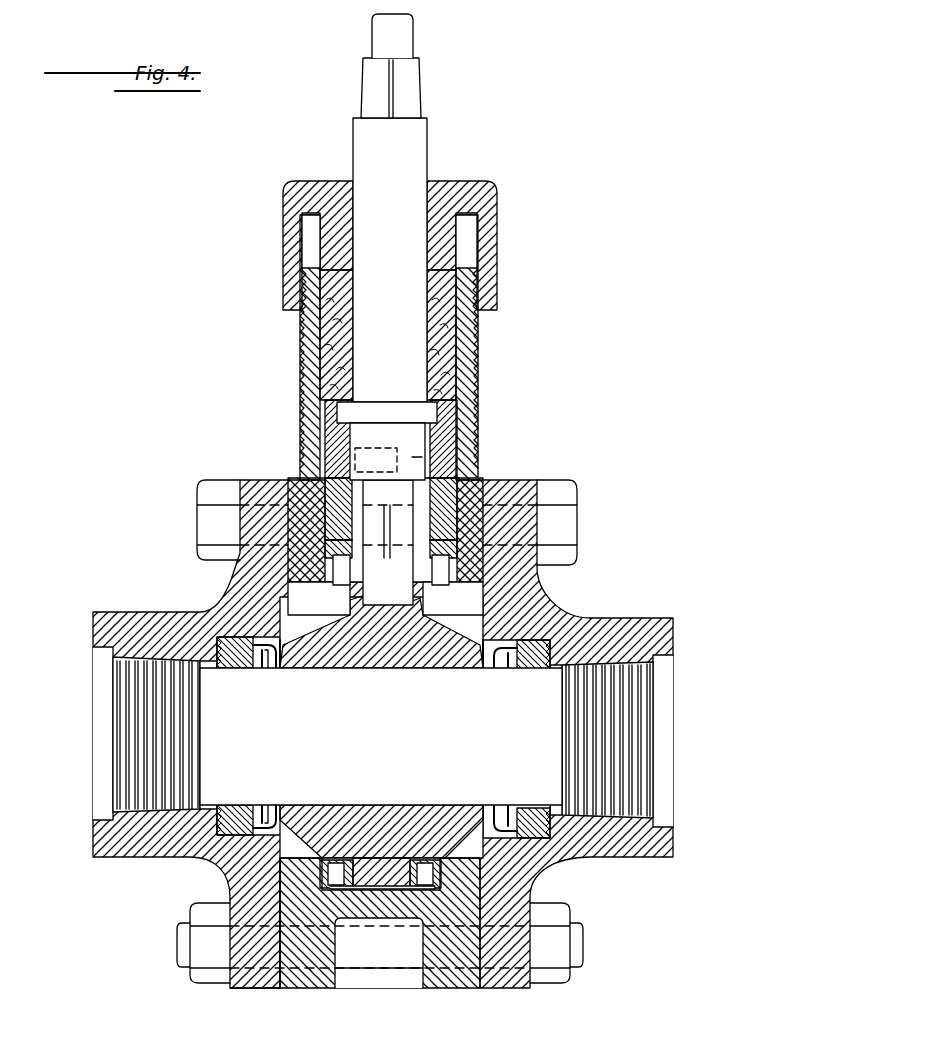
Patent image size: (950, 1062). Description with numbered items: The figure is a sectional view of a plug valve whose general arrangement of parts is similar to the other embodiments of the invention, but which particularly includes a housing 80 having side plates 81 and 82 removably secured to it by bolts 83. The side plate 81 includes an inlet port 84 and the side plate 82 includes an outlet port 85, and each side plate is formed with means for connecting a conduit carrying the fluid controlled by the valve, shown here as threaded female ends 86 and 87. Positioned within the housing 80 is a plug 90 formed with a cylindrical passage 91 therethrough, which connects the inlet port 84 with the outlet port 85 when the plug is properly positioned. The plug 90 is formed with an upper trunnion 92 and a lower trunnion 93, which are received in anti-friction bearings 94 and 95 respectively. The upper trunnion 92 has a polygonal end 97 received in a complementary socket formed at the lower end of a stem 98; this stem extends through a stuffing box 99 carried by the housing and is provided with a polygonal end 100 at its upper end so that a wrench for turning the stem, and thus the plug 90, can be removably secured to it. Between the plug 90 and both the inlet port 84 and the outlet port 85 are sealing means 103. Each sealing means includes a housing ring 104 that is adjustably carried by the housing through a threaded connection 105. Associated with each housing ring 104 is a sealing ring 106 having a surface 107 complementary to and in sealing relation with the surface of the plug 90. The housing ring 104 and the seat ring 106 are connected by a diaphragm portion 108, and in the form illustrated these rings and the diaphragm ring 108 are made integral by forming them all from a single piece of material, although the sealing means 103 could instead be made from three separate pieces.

The housing 80 is at (317, 990).
The side plate 81 is at (259, 990).
The side plate 82 is at (514, 988).
The bolts 83 is at (210, 978).
The inlet port 84 is at (196, 858).
The outlet port 85 is at (578, 850).
The threaded female end 86 is at (132, 857).
The threaded female end 87 is at (643, 857).
The plug 90 is at (397, 662).
The cylindrical passage 91 is at (424, 676).
The upper trunnion 92 is at (453, 598).
The lower trunnion 93 is at (396, 872).
The anti-friction bearing 94 is at (484, 478).
The anti-friction bearing 95 is at (427, 887).
The polygonal end 97 is at (481, 480).
The stem 98 is at (450, 556).
The stuffing box 99 is at (445, 333).
The polygonal end 100 is at (412, 93).
The sealing means 103 is at (243, 672).
The housing ring 104 is at (215, 640).
The threaded connection 105 is at (238, 640).
The sealing ring 106 is at (319, 598).
The surface 107 is at (318, 656).
The diaphragm portion 108 is at (275, 660).